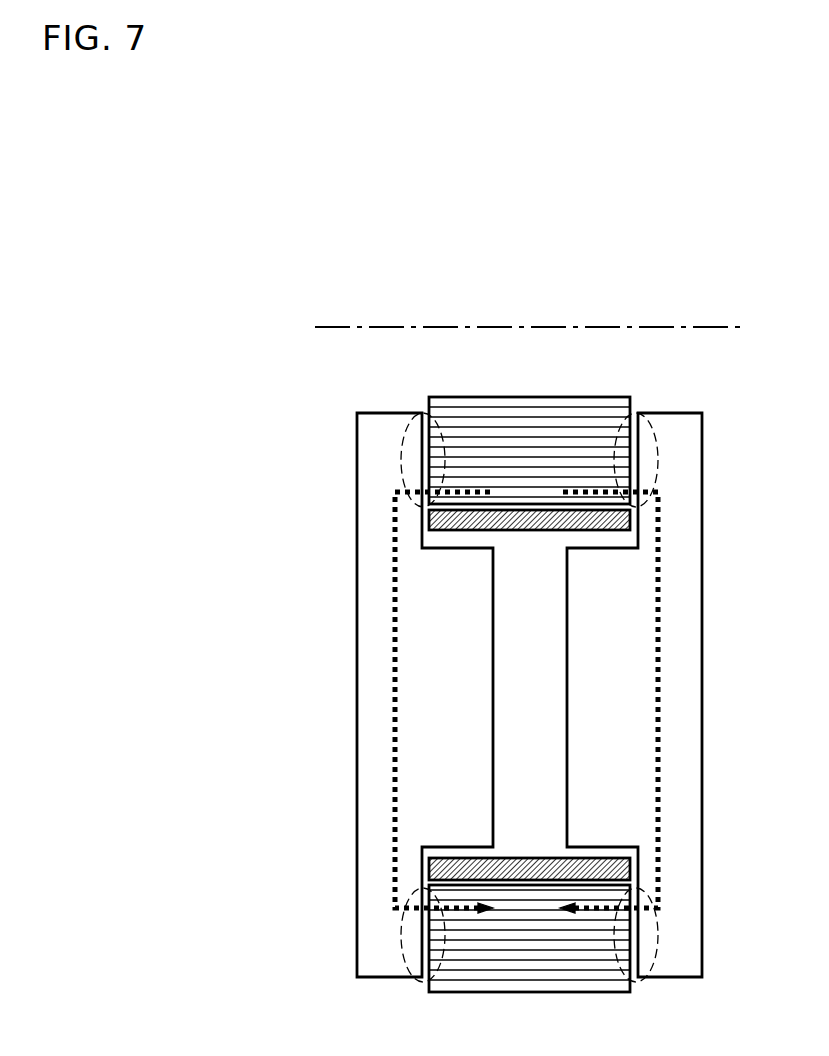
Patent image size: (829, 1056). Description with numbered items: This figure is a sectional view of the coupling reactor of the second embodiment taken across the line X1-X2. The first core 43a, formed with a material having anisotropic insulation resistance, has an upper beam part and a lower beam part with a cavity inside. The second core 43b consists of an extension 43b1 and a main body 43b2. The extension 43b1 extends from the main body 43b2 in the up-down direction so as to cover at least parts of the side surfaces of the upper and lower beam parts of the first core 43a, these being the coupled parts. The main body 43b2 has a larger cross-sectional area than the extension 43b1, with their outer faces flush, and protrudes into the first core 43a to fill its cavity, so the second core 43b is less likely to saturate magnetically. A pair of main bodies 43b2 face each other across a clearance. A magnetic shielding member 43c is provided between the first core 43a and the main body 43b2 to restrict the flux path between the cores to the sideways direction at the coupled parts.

The first core 43a is at (528, 397).
The second core 43b is at (368, 660).
The extension 43b1 is at (368, 453).
The main body 43b2 is at (490, 660).
The magnetic shielding member 43c is at (528, 530).
The line X1-X2 end point X1 is at (315, 333).
The line X1-X2 end point X2 is at (740, 333).